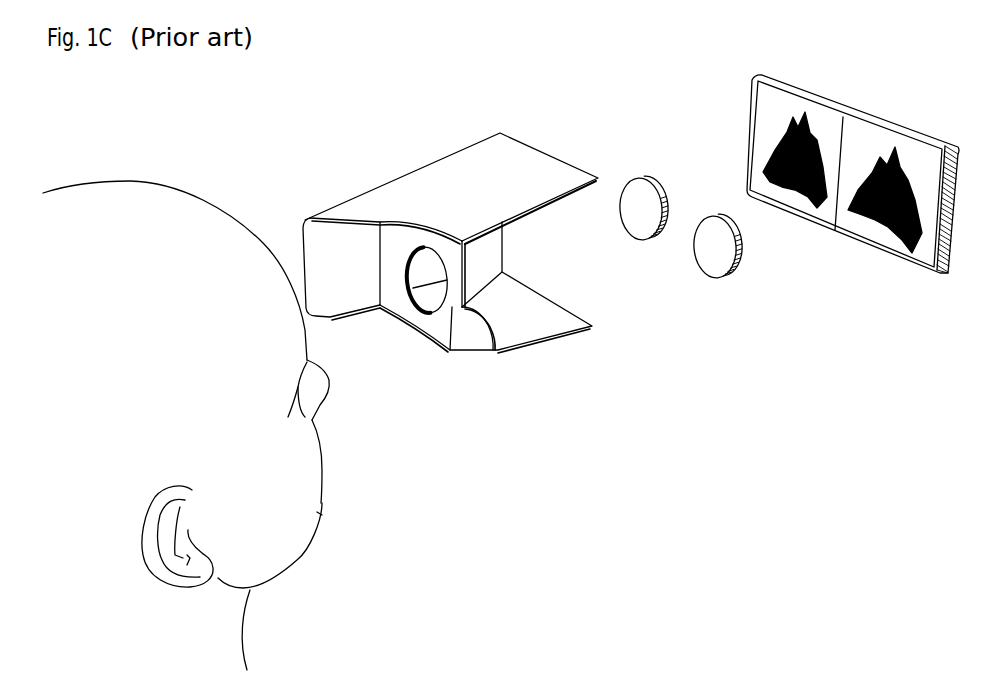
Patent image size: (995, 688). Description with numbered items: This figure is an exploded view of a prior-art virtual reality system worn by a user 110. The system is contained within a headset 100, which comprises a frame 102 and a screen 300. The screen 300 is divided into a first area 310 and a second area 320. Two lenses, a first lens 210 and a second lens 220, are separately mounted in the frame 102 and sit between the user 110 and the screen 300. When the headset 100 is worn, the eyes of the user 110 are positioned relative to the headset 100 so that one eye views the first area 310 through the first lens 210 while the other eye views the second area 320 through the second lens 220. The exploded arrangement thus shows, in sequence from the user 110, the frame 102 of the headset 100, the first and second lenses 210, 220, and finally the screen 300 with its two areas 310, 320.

The headset 100 is at (493, 130).
The frame 102 is at (440, 315).
The user 110 is at (186, 425).
The first lens 210 is at (620, 178).
The second lens 220 is at (745, 279).
The screen 300 is at (753, 72).
The first area 310 is at (785, 218).
The second area 320 is at (875, 255).